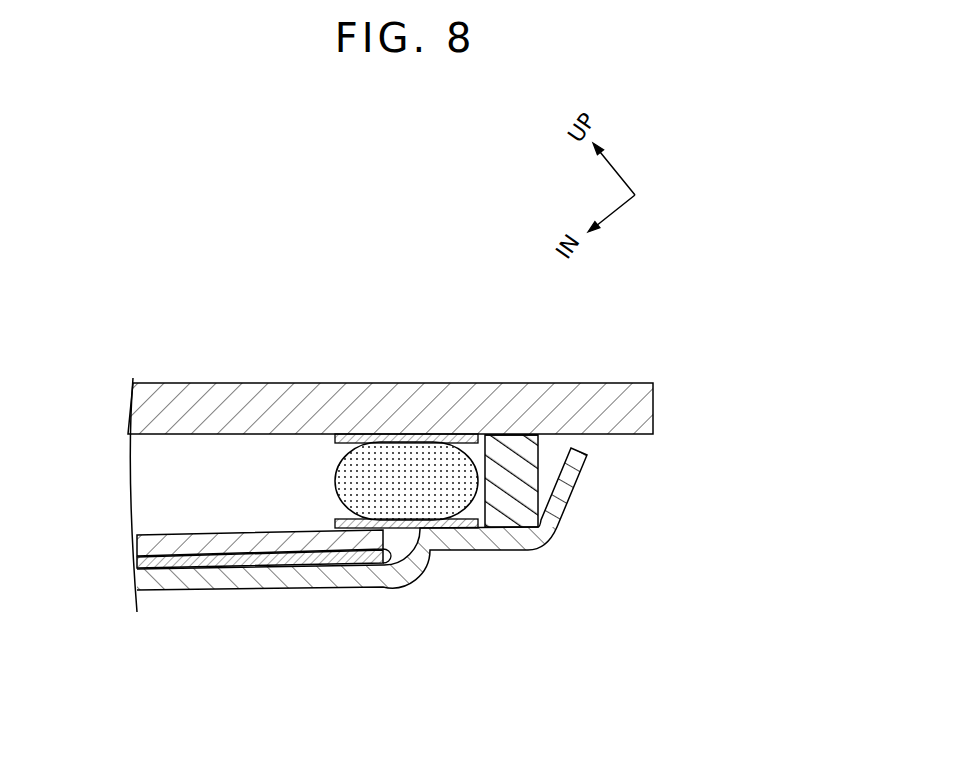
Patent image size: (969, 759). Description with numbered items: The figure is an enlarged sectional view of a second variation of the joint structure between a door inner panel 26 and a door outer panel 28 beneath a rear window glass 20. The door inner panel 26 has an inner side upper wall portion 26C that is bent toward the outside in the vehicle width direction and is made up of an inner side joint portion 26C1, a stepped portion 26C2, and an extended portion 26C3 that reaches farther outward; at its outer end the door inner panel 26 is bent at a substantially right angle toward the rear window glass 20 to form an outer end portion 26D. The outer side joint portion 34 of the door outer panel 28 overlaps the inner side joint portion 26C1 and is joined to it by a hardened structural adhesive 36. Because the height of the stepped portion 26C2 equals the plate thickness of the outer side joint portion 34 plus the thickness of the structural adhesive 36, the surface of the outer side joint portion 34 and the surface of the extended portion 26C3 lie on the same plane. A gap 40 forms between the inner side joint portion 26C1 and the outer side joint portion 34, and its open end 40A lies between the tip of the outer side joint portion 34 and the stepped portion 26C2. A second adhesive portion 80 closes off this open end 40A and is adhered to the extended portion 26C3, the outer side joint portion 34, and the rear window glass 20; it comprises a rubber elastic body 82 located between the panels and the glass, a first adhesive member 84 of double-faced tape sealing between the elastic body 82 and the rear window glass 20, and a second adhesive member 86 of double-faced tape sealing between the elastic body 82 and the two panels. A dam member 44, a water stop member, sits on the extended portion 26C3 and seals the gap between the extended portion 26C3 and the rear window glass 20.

The rear window glass 20 is at (236, 381).
The door outer panel 28 is at (150, 530).
The outer side joint portion 34 is at (252, 543).
The structural adhesive 36 is at (207, 556).
The open end 40A is at (380, 596).
The gap 40 is at (397, 562).
The door inner panel 26 is at (404, 595).
The inner side upper wall portion 26C is at (353, 635).
The inner side joint portion 26C1 is at (293, 580).
The stepped portion 26C2 is at (433, 560).
The extended portion 26C3 is at (495, 611).
The outer end portion 26D is at (577, 490).
The dam member 44 is at (520, 436).
The second adhesive portion 80 is at (436, 401).
The elastic body 82 is at (415, 465).
The first adhesive member 84 is at (348, 432).
The second adhesive member 86 is at (493, 422).